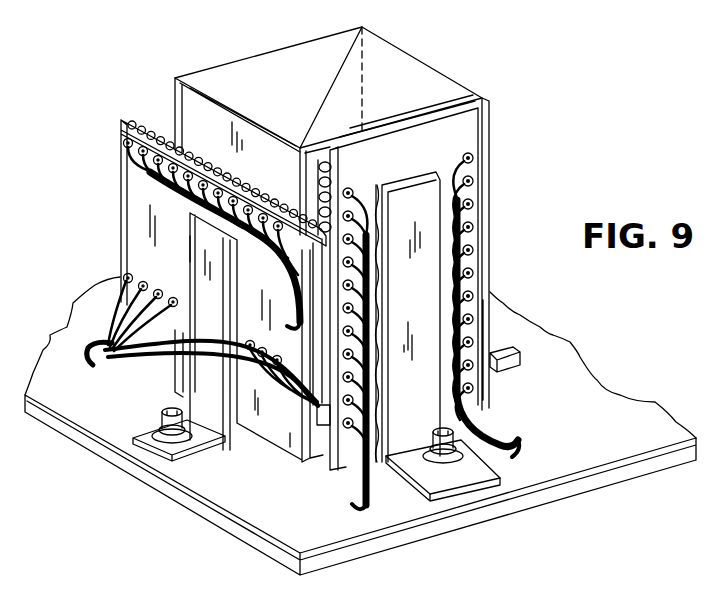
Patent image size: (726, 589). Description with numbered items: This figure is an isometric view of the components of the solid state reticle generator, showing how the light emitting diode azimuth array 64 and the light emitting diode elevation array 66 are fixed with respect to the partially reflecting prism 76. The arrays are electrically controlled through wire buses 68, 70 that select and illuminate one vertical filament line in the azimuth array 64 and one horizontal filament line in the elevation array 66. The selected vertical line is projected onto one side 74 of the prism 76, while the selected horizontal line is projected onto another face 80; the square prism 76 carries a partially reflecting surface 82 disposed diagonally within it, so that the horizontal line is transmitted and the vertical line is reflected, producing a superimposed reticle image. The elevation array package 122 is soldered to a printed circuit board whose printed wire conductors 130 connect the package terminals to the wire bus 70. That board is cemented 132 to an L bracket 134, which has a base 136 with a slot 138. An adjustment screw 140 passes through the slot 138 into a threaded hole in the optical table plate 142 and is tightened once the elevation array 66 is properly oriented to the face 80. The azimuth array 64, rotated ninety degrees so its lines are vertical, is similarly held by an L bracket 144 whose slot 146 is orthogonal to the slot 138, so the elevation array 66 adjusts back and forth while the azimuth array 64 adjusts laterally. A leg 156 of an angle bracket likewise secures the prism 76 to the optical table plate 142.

The light emitting diode azimuth array 64 is at (137, 212).
The light emitting diode elevation array 66 is at (436, 151).
The wire bus 68 is at (280, 412).
The wire bus 70 is at (512, 415).
The prism side 74 is at (187, 108).
The partially reflecting prism 76 is at (459, 97).
The prism face 80 is at (490, 124).
The partially reflecting surface 82 is at (334, 91).
The elevation array package 122 is at (330, 185).
The printed wire conductors 130 is at (470, 262).
The cement 132 is at (378, 190).
The L bracket 134 is at (428, 296).
The base 136 is at (492, 478).
The slot 138 is at (436, 479).
The adjustment screw 140 is at (435, 446).
The optical table plate 142 is at (403, 533).
The L bracket 144 is at (150, 422).
The slot 146 is at (207, 446).
The leg of angle bracket 156 is at (498, 358).